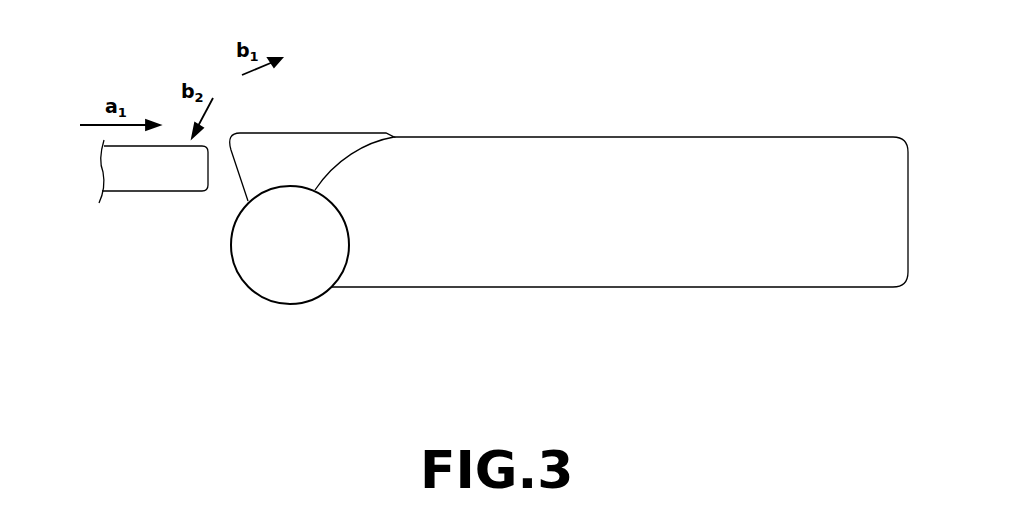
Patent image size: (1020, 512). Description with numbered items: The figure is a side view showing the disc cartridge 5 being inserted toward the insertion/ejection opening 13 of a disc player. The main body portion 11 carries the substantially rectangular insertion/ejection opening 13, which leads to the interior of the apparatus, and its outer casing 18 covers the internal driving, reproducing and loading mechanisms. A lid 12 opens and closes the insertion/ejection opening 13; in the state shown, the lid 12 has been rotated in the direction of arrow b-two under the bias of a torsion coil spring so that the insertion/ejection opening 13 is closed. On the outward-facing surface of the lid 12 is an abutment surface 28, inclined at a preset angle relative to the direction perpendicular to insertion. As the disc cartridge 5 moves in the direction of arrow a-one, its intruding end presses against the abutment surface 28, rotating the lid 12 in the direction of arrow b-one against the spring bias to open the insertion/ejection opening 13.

The disc cartridge 5 is at (121, 172).
The main body portion 11 is at (763, 136).
The lid 12 is at (313, 148).
The insertion/ejection opening 13 is at (230, 207).
The outer casing 18 is at (794, 262).
The abutment surface 28 is at (237, 177).